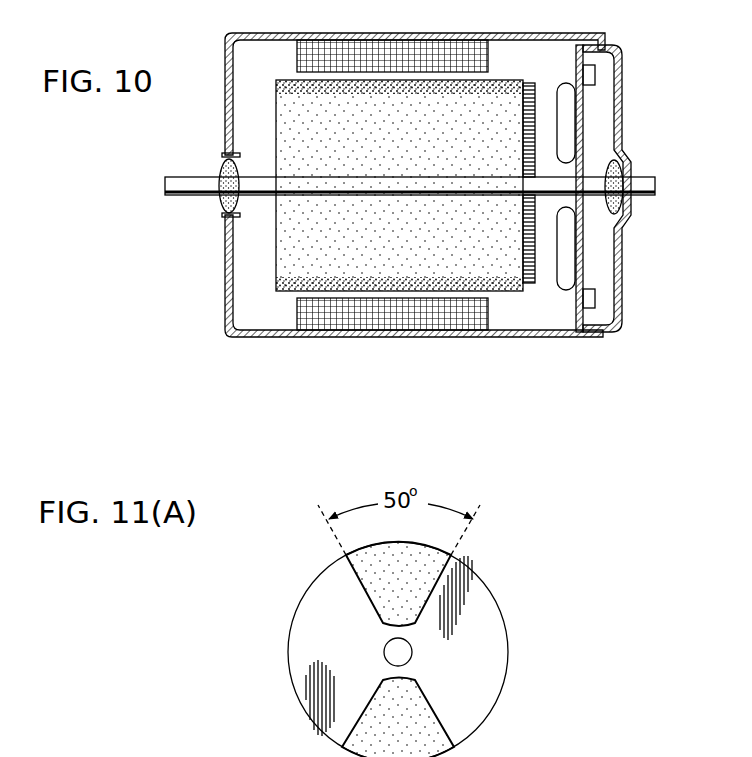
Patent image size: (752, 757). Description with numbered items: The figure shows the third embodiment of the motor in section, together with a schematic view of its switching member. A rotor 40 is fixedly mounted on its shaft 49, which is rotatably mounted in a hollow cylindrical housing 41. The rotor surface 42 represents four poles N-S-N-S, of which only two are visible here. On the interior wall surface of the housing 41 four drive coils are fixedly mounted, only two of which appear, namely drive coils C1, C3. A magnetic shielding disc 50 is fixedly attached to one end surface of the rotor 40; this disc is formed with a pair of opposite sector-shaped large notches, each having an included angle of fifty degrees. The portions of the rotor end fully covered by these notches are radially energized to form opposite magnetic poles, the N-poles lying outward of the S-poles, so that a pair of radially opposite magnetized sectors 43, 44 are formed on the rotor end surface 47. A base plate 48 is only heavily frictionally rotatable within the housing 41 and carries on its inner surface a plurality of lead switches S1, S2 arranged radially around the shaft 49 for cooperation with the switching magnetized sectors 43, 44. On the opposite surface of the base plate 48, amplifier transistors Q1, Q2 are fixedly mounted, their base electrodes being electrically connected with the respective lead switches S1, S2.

In FIG. 10, the rotor 40 is at (274, 252).
The rotor 40 is at (501, 600).
In FIG. 10, the housing 41 is at (497, 37).
In FIG. 10, the rotor surface 42 is at (406, 334).
The magnetized sector 43 is at (361, 584).
The magnetized sector 44 is at (456, 738).
In FIG. 10, the rotor end surface 47 is at (534, 108).
In FIG. 10, the base plate 48 is at (584, 230).
In FIG. 10, the shaft 49 is at (247, 178).
In FIG. 10, the magnetic shielding disc 50 is at (535, 272).
The magnetic shielding disc 50 is at (296, 681).
In FIG. 10, the drive coil C1 is at (312, 42).
In FIG. 10, the drive coil C3 is at (315, 331).
In FIG. 10, the lead switch S1 is at (568, 103).
In FIG. 10, the lead switch S2 is at (568, 257).
In FIG. 10, the amplifier transistor Q1 is at (590, 76).
In FIG. 10, the amplifier transistor Q2 is at (590, 300).